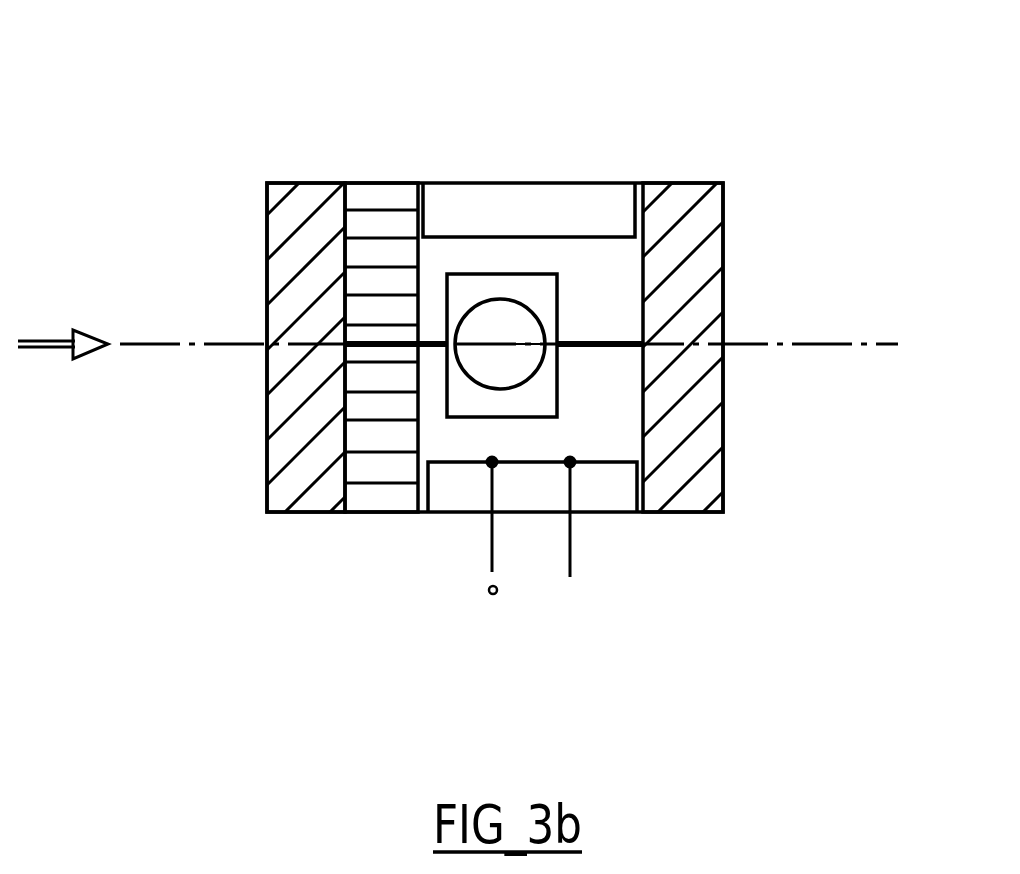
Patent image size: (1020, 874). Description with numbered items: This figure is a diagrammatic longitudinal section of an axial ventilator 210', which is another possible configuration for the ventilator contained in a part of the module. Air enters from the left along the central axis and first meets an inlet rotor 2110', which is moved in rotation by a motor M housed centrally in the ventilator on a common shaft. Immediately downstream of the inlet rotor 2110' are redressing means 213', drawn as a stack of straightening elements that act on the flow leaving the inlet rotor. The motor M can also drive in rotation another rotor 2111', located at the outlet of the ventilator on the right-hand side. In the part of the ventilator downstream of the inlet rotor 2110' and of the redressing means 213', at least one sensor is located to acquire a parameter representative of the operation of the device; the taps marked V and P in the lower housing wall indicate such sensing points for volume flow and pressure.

The axial ventilator 210' is at (503, 337).
The inlet rotor 2110' is at (247, 374).
The redressing means 213' is at (370, 422).
The outlet rotor 2111' is at (750, 359).